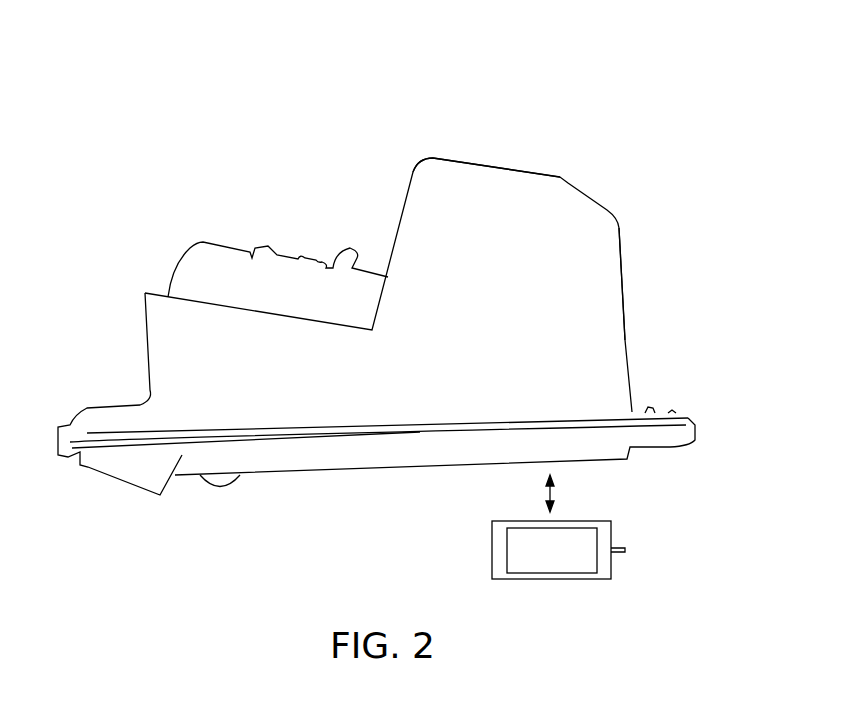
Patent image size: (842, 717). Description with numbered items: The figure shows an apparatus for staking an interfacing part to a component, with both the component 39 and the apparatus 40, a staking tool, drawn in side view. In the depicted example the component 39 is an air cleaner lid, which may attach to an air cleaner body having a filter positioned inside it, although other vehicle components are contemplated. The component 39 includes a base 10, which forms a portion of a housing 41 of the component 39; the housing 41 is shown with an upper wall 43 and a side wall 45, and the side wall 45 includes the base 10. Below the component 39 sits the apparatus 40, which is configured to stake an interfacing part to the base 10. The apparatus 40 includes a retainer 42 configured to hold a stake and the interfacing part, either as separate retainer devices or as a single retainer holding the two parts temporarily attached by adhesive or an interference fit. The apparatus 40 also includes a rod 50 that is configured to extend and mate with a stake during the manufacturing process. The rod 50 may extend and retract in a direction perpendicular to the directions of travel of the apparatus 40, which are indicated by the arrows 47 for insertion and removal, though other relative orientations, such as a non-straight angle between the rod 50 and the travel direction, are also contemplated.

The base 10 is at (623, 310).
The component 39 is at (566, 90).
The housing 41 is at (520, 149).
The upper wall 43 is at (458, 160).
The side wall 45 is at (647, 269).
The arrows 47 is at (548, 493).
The retainer 42 is at (507, 532).
The apparatus 40 is at (492, 573).
The rod 50 is at (620, 552).